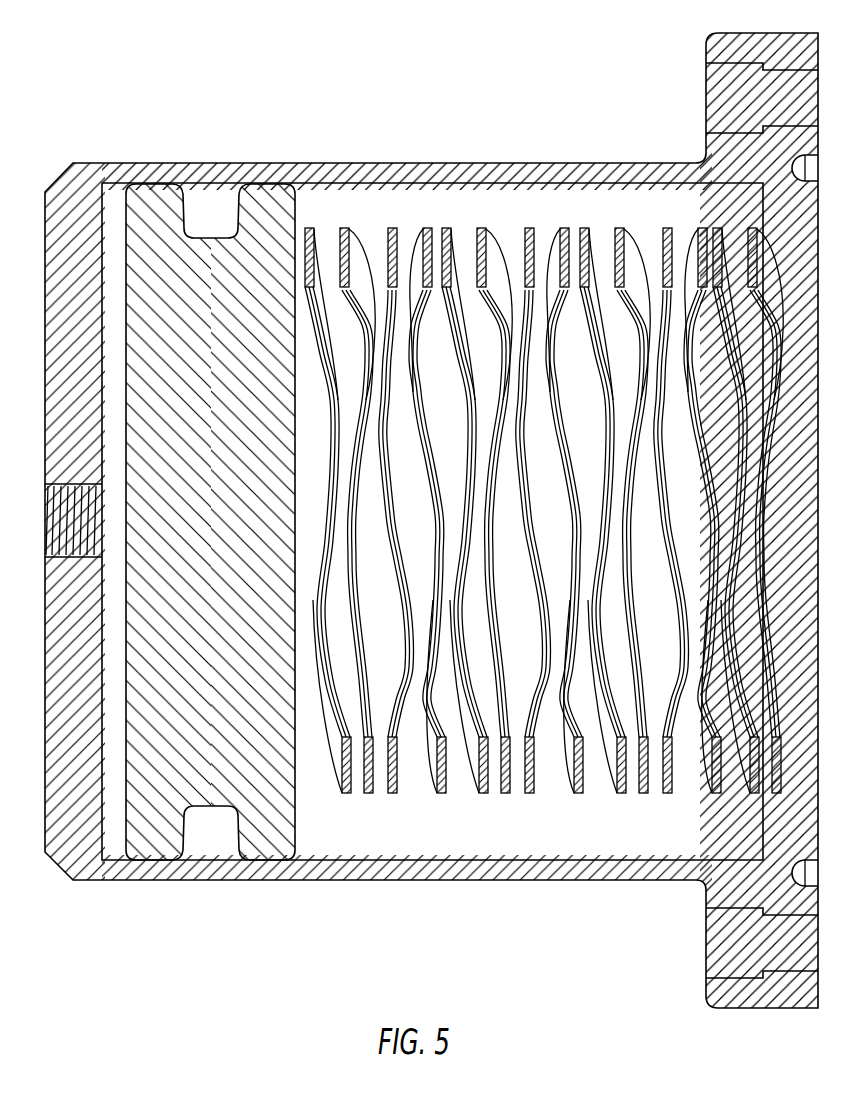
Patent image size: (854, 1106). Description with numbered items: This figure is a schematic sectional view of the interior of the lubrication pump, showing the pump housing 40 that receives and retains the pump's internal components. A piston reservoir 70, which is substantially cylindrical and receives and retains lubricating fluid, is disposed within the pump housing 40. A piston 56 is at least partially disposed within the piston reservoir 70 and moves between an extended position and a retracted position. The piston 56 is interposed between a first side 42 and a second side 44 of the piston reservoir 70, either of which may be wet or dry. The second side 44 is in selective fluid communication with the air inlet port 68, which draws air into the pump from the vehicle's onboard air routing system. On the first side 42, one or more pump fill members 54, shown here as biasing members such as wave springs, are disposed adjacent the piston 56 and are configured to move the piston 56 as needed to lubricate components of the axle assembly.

The pump housing 40 is at (593, 876).
The first side 42 is at (655, 838).
The second side 44 is at (110, 815).
The pump fill members 54 is at (641, 793).
The piston 56 is at (157, 838).
The air inlet port 68 is at (53, 503).
The piston reservoir 70 is at (338, 823).